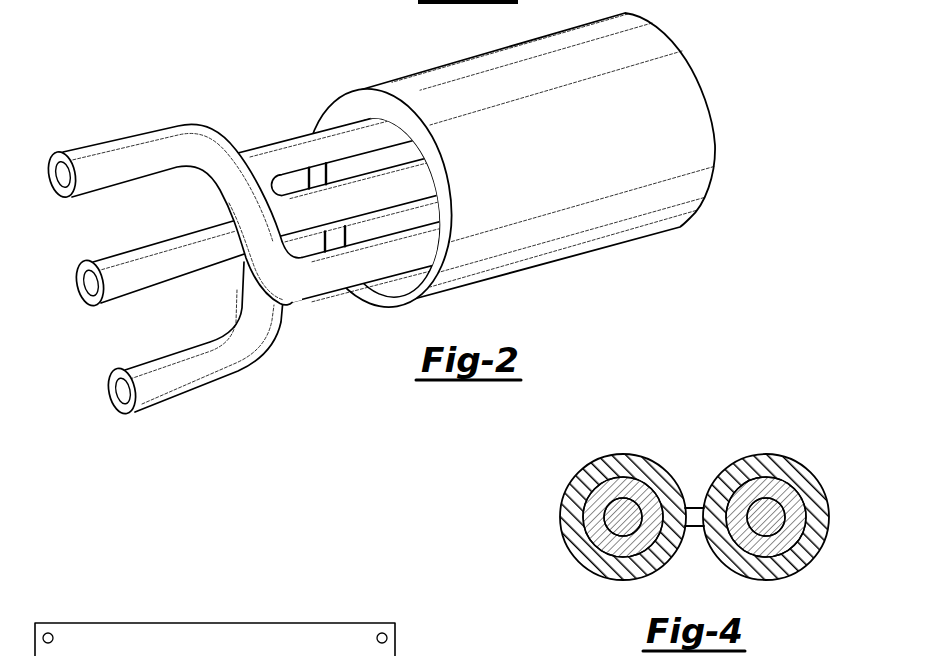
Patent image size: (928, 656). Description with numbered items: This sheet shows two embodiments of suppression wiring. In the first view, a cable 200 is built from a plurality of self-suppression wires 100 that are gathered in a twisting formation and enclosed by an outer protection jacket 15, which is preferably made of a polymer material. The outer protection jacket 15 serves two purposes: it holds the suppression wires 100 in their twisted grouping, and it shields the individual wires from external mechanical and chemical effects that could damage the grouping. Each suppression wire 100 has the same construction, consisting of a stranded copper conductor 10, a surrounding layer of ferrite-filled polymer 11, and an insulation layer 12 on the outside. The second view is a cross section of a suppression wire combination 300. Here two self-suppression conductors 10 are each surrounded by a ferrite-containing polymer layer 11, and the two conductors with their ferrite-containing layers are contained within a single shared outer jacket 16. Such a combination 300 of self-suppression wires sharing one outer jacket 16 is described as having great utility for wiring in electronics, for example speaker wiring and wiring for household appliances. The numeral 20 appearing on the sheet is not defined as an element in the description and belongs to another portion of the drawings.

In FIG. 2, the cable 200 is at (380, 208).
In FIG. 2, the outer protection jacket 15 is at (328, 110).
In FIG. 4, the combination of self-suppression wires 300 is at (721, 490).
In FIG. 4, the insulation layer 12 is at (694, 503).
In FIG. 4, the stranded copper conductor 10 is at (790, 503).
In FIG. 4, the layer of ferrite-filled polymer 11 is at (800, 525).
In FIG. 4, the outer jacket 16 is at (796, 585).
In FIG. 4, the housing plate 20 is at (249, 639).
In FIG. 4, the self-suppression wire 100 is at (556, 650).